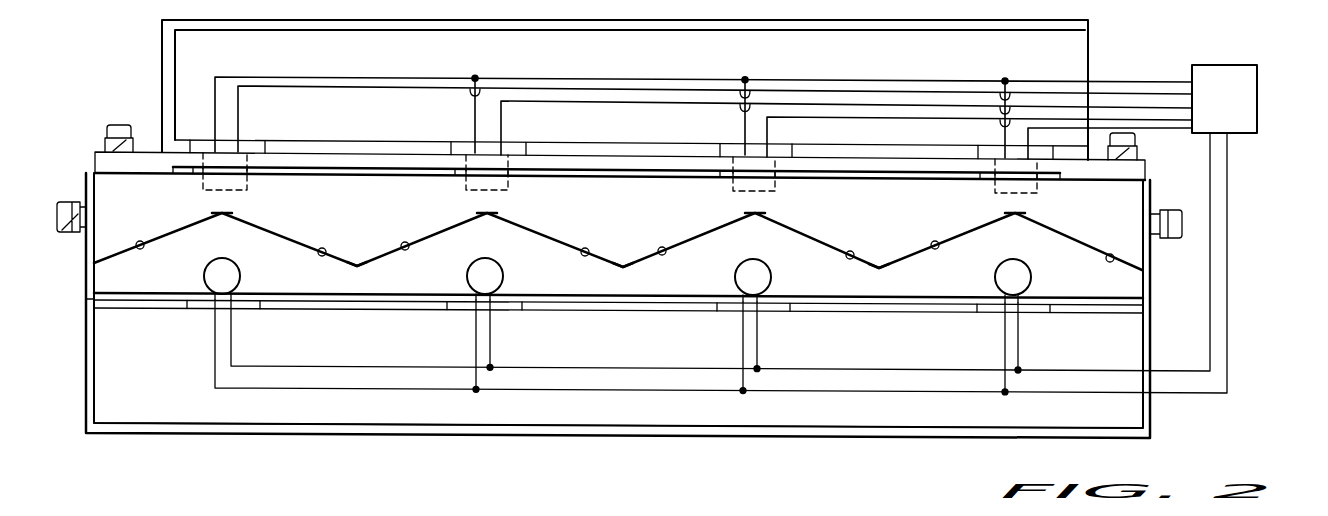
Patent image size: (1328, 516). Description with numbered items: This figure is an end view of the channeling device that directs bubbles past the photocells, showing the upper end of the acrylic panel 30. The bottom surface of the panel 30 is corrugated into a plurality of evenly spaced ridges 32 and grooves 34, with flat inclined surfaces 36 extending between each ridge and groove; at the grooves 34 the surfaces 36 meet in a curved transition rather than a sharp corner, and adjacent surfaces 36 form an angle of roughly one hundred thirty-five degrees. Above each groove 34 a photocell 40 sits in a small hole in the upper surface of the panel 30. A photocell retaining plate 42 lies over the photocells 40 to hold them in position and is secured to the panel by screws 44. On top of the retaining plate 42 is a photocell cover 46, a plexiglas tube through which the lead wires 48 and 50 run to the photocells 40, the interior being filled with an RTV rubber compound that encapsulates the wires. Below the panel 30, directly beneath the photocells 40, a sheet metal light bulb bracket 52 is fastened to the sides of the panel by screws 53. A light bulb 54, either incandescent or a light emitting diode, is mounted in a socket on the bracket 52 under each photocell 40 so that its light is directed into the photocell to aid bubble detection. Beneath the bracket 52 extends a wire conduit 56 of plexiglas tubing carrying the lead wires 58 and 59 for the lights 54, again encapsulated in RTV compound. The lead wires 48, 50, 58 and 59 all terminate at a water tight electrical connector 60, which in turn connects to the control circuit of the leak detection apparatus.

The acrylic panel 30 is at (1137, 257).
The ridges 32 is at (357, 268).
The grooves 34 is at (221, 216).
The flat inclined surfaces 36 is at (141, 241).
The photocell 40 is at (247, 190).
The photocell retaining plate 42 is at (1140, 168).
The screws 44 is at (106, 134).
The photocell cover 46 is at (160, 62).
The lead wire 48 is at (879, 78).
The lead wires 50 is at (600, 90).
The light bulb bracket 52 is at (86, 292).
The screws 53 is at (72, 203).
The light bulb 54 is at (224, 273).
The wire conduit 56 is at (86, 393).
The lead wire 58 is at (1090, 367).
The lead wire 59 is at (617, 390).
The water tight electrical connector 60 is at (1247, 87).